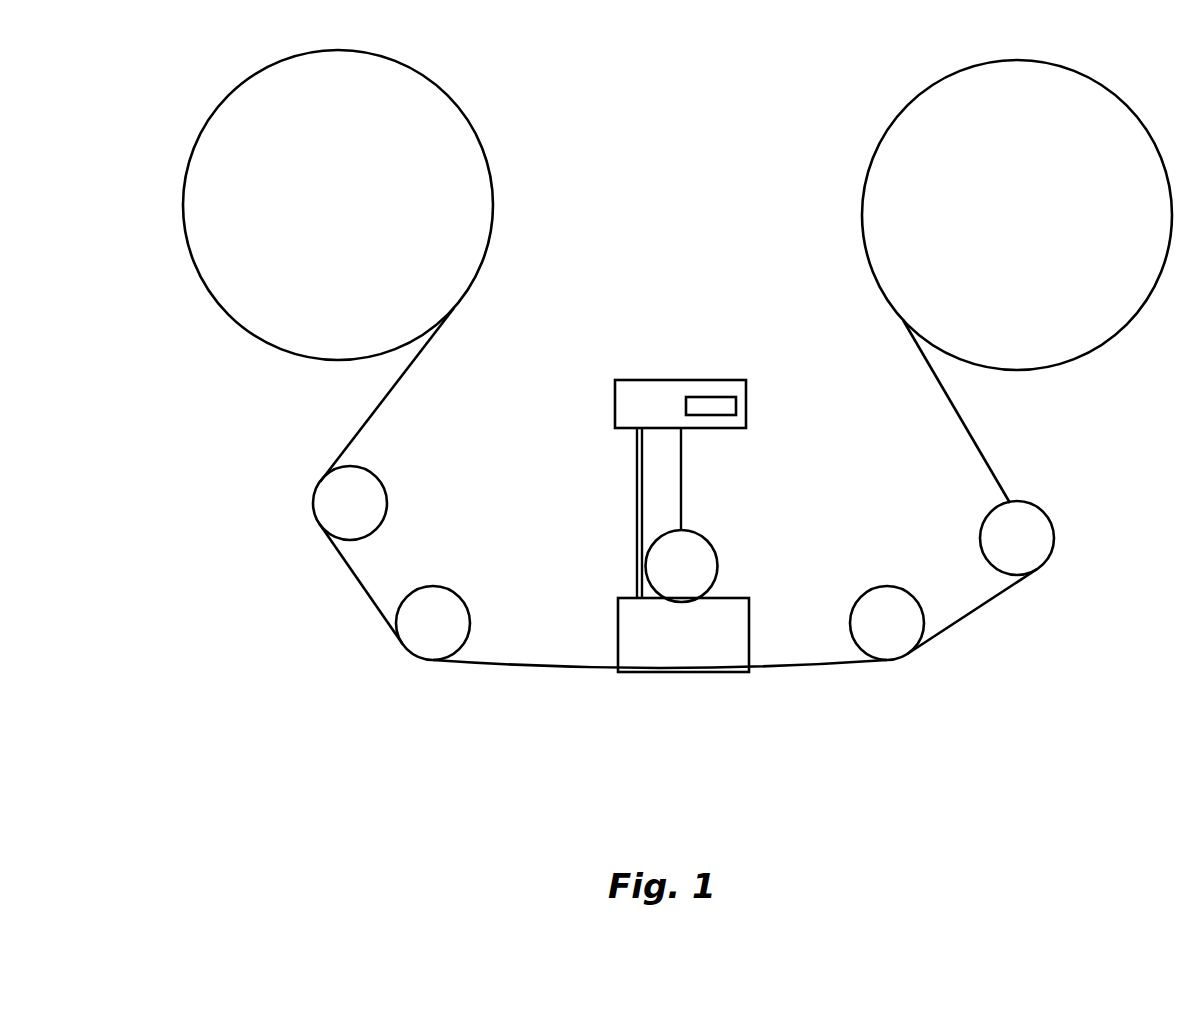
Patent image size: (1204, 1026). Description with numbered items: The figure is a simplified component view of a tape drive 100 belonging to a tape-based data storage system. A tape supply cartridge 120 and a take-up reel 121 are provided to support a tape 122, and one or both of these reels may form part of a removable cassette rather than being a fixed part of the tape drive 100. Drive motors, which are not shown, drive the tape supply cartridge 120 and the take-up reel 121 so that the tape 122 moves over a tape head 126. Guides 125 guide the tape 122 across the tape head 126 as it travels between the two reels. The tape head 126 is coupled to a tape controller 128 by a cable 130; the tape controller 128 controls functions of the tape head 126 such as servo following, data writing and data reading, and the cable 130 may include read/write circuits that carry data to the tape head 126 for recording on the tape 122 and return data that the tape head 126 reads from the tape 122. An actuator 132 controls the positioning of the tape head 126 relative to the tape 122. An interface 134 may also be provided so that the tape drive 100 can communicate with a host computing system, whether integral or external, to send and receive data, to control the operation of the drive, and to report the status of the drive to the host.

The tape drive 100 is at (290, 420).
The tape supply cartridge 120 is at (492, 178).
The take-up reel 121 is at (1113, 340).
The tape 122 is at (530, 665).
The guides 125 is at (437, 586).
The tape head 126 is at (749, 632).
The tape controller 128 is at (680, 380).
The cable 130 is at (637, 560).
The actuator 132 is at (705, 538).
The interface 134 is at (725, 397).